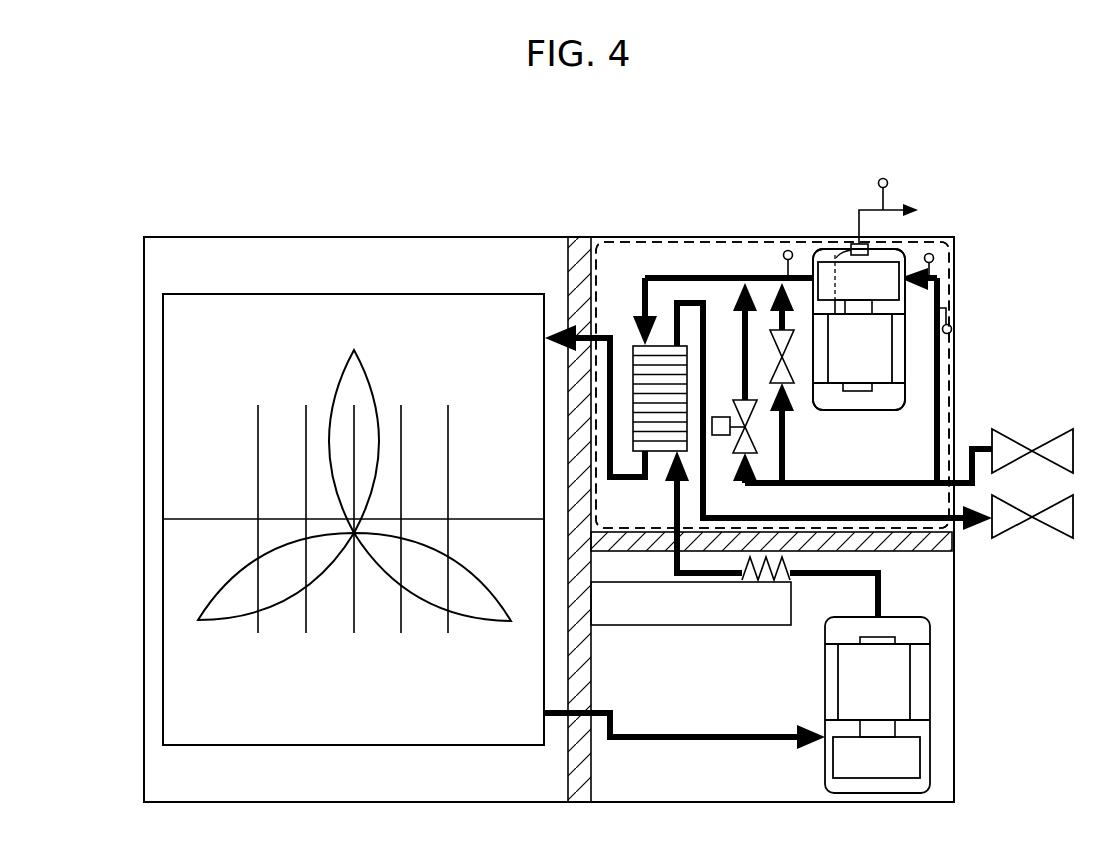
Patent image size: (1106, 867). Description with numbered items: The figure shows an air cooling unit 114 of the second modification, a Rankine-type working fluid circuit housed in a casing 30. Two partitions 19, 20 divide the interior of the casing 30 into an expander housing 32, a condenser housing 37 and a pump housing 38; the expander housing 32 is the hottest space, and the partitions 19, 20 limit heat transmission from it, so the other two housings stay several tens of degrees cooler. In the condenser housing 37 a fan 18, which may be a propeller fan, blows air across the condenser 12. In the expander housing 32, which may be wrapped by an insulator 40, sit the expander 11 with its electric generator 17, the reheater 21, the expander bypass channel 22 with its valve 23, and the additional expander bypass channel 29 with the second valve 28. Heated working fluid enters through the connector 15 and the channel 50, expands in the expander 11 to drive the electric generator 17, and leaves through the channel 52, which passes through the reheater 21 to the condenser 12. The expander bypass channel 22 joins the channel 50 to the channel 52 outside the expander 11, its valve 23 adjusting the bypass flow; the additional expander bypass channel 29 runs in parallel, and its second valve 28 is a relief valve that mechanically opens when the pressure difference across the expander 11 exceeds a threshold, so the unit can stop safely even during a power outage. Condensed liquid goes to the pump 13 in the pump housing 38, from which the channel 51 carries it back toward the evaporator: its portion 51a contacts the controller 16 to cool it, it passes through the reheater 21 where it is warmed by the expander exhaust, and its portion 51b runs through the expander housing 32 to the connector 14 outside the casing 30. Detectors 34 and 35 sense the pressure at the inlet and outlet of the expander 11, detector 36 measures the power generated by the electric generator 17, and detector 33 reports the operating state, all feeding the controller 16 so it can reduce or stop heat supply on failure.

The air cooling unit 114 is at (846, 100).
The casing 30 is at (455, 237).
The condenser 12 is at (218, 320).
The condenser housing 37 is at (299, 260).
The fan 18 is at (240, 598).
The partition 19 is at (581, 248).
The partition 20 is at (630, 551).
The pump housing 38 is at (656, 785).
The controller 16 is at (685, 605).
The expander housing 32 is at (752, 253).
The insulator 40 is at (942, 240).
The reheater 21 is at (631, 345).
The channel 52 is at (665, 345).
The channel 51a is at (883, 593).
The channel 51b is at (985, 527).
The channel 51 is at (1016, 580).
The expander bypass channel 22 is at (762, 500).
The valve 23 is at (716, 417).
The additional expander bypass channel 29 is at (786, 460).
The second valve 28 is at (795, 372).
The channel 50 is at (987, 442).
The electric generator 17 is at (860, 357).
The expander 11 is at (905, 250).
The detector 36 is at (887, 180).
The detector 35 is at (790, 251).
The detector 33 is at (934, 258).
The detector 34 is at (952, 328).
The connector 15 is at (1063, 432).
The connector 14 is at (1050, 525).
The pump 13 is at (930, 708).